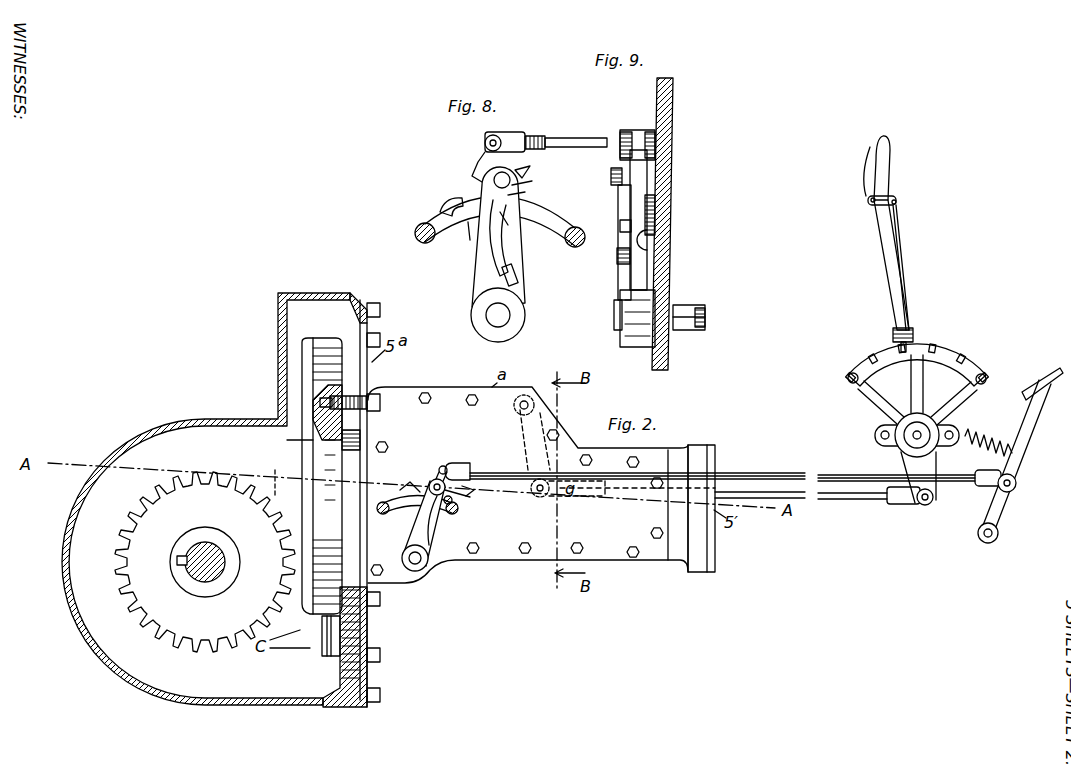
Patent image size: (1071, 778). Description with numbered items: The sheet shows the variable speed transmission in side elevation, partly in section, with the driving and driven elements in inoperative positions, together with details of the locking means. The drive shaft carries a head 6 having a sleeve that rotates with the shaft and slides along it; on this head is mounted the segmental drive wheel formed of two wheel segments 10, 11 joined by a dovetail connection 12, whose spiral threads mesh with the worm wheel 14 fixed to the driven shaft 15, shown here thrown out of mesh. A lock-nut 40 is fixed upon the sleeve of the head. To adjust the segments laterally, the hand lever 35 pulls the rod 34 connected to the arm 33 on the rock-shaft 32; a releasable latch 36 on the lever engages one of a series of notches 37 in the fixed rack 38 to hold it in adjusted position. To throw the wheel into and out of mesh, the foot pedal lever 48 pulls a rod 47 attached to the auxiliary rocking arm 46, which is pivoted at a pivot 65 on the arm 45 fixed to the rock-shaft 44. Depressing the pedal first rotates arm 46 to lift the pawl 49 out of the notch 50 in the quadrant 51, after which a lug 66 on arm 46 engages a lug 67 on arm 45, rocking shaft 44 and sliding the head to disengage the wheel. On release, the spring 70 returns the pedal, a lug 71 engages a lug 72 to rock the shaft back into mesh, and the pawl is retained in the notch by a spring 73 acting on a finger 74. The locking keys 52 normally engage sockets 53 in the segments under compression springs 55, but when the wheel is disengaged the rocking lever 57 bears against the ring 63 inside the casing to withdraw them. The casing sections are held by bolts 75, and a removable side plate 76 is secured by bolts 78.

In FIG. 2, the head 6 is at (336, 404).
In FIG. 2, the wheel segment 10 is at (310, 640).
In FIG. 2, the wheel segment 11 is at (313, 440).
In FIG. 2, the dovetail connection 12 is at (322, 664).
In FIG. 2, the worm wheel 14 is at (178, 562).
In FIG. 2, the driven shaft 15 is at (208, 582).
In FIG. 2, the rock-shaft 32 is at (514, 405).
In FIG. 2, the arm 33 is at (527, 443).
In FIG. 2, the rod 34 is at (862, 500).
In FIG. 2, the operating lever 35 is at (882, 280).
In FIG. 2, the releasable latch 36 is at (906, 312).
In FIG. 2, the notches 37 is at (976, 356).
In FIG. 2, the fixed rack 38 is at (872, 358).
In FIG. 9, the lock-nut 40 is at (689, 317).
In FIG. 2, the rock-shaft 44 is at (415, 562).
In FIG. 8, the rock-shaft 44 is at (492, 318).
In FIG. 9, the rock-shaft 44 is at (690, 308).
In FIG. 2, the arm 45 is at (405, 551).
In FIG. 8, the arm 45 is at (472, 288).
In FIG. 9, the arm 45 is at (640, 200).
In FIG. 2, the auxiliary rocking arm 46 is at (441, 465).
In FIG. 8, the auxiliary rocking arm 46 is at (487, 142).
In FIG. 9, the auxiliary rocking arm 46 is at (638, 132).
In FIG. 2, the rod 47 is at (778, 474).
In FIG. 8, the rod 47 is at (575, 140).
In FIG. 2, the operating lever 48 is at (1022, 405).
In FIG. 2, the pawl 49 is at (410, 480).
In FIG. 8, the pawl 49 is at (470, 198).
In FIG. 9, the pawl 49 is at (650, 178).
In FIG. 2, the notch 50 is at (395, 500).
In FIG. 8, the notch 50 is at (444, 208).
In FIG. 2, the quadrant 51 is at (390, 513).
In FIG. 8, the quadrant 51 is at (440, 236).
In FIG. 9, the quadrant 51 is at (656, 222).
In FIG. 2, the locking key 52 is at (350, 402).
In FIG. 2, the socket 53 is at (320, 401).
In FIG. 2, the compression spring 55 is at (381, 402).
In FIG. 2, the rocking lever 57 is at (362, 441).
In FIG. 2, the ring 63 is at (360, 497).
In FIG. 2, the pivot 65 is at (455, 462).
In FIG. 8, the pivot 65 is at (525, 194).
In FIG. 9, the pivot 65 is at (612, 174).
In FIG. 2, the lug 66 is at (474, 490).
In FIG. 8, the lug 66 is at (530, 168).
In FIG. 2, the lug 67 is at (455, 502).
In FIG. 8, the lug 67 is at (532, 182).
In FIG. 2, the spring 70 is at (1012, 452).
In FIG. 2, the lug 71 is at (435, 479).
In FIG. 8, the lug 71 is at (480, 172).
In FIG. 8, the lug 72 is at (470, 224).
In FIG. 2, the spring 73 is at (434, 530).
In FIG. 8, the spring 73 is at (503, 262).
In FIG. 2, the finger 74 is at (446, 493).
In FIG. 8, the finger 74 is at (505, 220).
In FIG. 9, the finger 74 is at (622, 226).
In FIG. 2, the bolts 75 is at (381, 310).
In FIG. 9, the bolts 75 is at (618, 256).
In FIG. 2, the side plate 76 is at (623, 504).
In FIG. 2, the bolts 78 is at (524, 552).